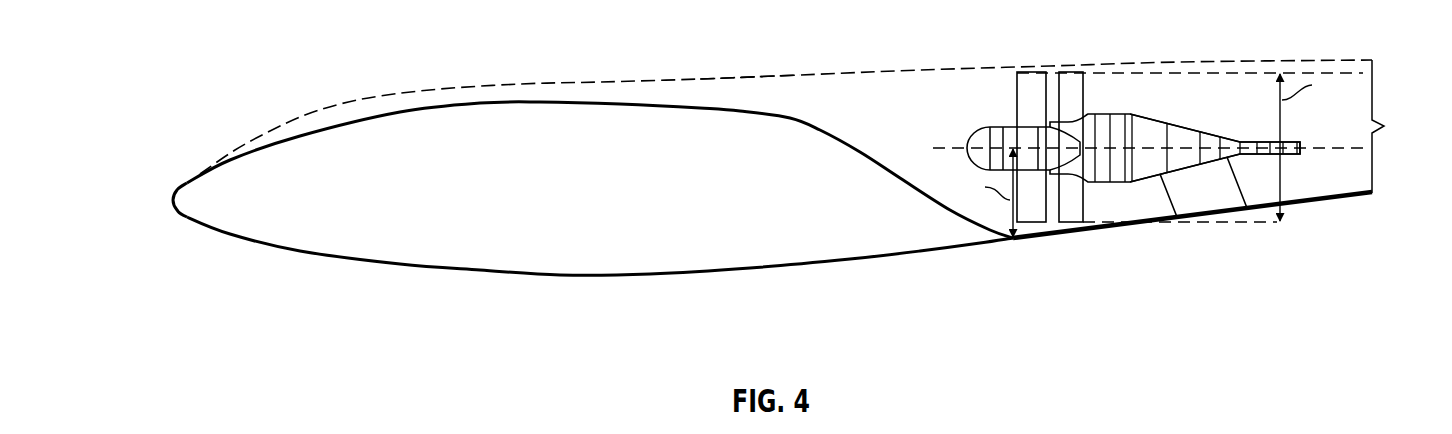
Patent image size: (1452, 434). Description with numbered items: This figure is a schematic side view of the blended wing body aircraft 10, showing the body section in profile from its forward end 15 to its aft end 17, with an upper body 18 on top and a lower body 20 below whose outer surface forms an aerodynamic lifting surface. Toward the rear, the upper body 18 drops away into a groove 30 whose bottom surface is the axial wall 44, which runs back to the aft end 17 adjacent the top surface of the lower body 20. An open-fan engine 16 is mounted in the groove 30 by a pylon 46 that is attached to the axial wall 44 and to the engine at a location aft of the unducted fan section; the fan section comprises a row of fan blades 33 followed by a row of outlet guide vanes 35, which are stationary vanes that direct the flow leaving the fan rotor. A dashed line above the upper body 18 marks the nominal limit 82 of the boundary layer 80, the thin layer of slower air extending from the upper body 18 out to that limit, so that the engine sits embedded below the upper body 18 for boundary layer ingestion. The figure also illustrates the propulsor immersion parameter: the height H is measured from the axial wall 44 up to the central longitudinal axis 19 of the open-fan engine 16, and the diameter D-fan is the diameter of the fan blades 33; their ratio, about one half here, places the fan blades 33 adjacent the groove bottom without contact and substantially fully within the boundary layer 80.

The blended wing body aircraft 10 is at (767, 174).
The forward end 15 is at (165, 199).
The open-fan engine 16 is at (1128, 118).
The aft end 17 is at (1378, 205).
The upper body 18 is at (400, 113).
The central longitudinal axis 19 is at (940, 147).
The lower body 20 is at (325, 258).
The groove 30 is at (1131, 143).
The fan blades 33 is at (1033, 72).
The outlet guide vanes 35 is at (1075, 72).
The axial wall 44 is at (1360, 184).
The pylon 46 is at (1163, 212).
The boundary layer 80 is at (757, 73).
The nominal limit 82 is at (690, 80).